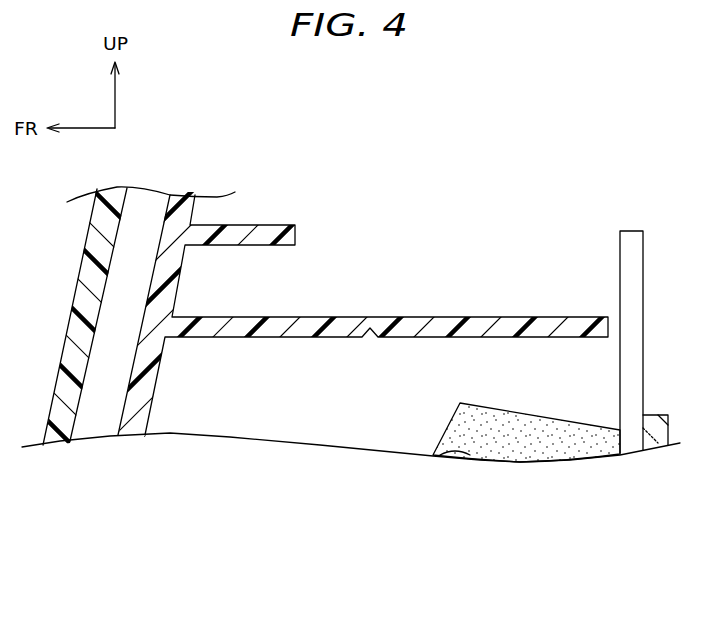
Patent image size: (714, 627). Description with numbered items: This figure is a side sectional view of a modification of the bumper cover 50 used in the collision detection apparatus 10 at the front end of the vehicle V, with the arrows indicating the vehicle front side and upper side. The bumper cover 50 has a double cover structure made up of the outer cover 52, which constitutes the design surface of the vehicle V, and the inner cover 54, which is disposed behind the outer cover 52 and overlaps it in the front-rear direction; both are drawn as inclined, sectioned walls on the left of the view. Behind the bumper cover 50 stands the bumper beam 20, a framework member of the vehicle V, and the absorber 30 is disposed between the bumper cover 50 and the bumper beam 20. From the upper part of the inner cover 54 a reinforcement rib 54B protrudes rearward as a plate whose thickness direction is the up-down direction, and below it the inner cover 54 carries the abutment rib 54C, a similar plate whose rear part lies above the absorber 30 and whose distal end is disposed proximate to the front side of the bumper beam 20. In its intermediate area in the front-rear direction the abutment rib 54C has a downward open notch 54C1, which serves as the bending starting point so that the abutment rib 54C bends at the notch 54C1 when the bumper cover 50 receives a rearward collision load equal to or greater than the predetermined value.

The collision detection apparatus 10 is at (465, 152).
The vehicle V is at (518, 113).
The bumper beam 20 is at (643, 232).
The absorber 30 is at (540, 412).
The bumper cover 50 is at (357, 350).
The outer cover 52 is at (52, 437).
The inner cover 54 is at (357, 350).
The reinforcement rib 54B is at (297, 237).
The abutment rib 54C is at (430, 325).
The notch 54C1 is at (368, 339).